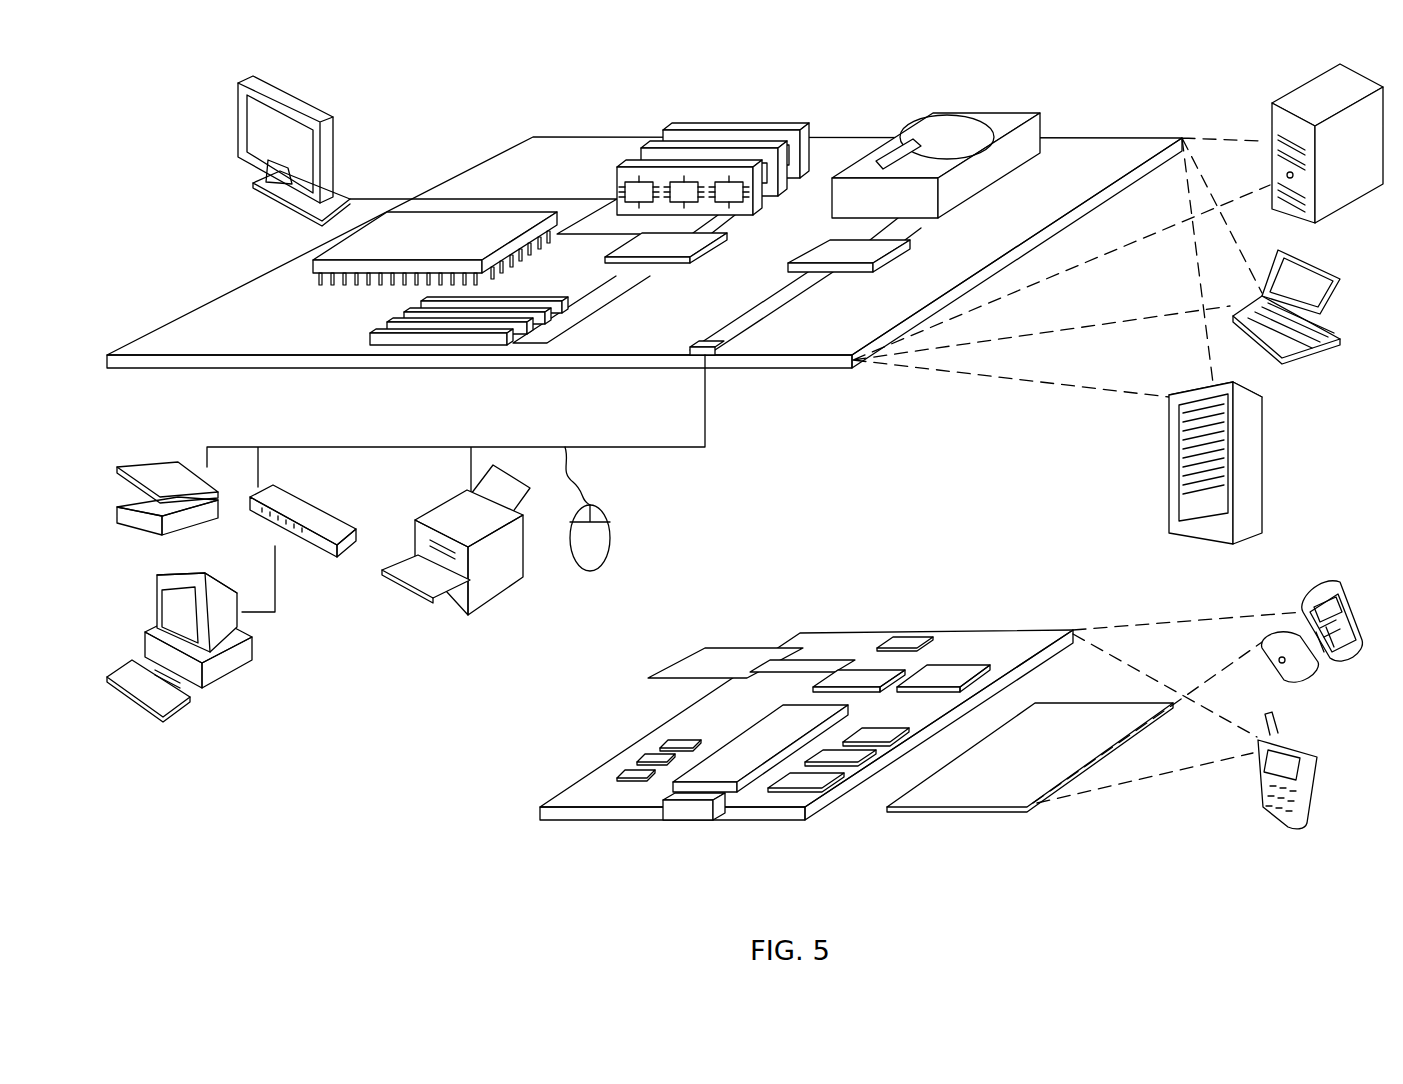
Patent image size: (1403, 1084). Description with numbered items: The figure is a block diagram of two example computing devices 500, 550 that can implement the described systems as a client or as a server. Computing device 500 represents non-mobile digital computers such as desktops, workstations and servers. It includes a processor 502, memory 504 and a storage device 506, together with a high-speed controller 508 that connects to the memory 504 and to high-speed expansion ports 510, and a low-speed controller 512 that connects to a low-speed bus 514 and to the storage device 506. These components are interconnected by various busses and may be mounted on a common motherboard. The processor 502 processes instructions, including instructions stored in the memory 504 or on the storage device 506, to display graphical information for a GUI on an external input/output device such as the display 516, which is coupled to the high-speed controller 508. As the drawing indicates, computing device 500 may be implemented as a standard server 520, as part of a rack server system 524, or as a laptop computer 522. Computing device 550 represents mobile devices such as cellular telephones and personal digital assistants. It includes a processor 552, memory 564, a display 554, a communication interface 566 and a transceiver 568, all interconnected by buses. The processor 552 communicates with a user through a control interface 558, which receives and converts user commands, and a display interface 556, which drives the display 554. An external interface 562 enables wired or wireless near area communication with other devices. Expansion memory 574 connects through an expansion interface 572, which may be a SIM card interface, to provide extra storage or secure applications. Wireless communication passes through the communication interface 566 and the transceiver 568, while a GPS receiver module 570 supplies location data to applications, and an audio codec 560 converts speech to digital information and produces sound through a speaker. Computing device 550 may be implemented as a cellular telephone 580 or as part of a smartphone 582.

The computing device 500 is at (449, 104).
The processor 502 is at (313, 264).
The memory 504 is at (667, 130).
The storage device 506 is at (930, 116).
The high-speed controller 508 is at (645, 248).
The high-speed expansion ports 510 is at (397, 326).
The low-speed controller 512 is at (830, 250).
The low-speed bus 514 is at (718, 352).
The display 516 is at (243, 82).
The standard server 520 is at (1272, 122).
The laptop computer 522 is at (1340, 276).
The rack server system 524 is at (1169, 488).
The computing device 550 is at (515, 828).
The processor 552 is at (730, 772).
The display 554 is at (988, 793).
The display interface 556 is at (803, 782).
The control interface 558 is at (840, 755).
The audio codec 560 is at (868, 736).
The external interface 562 is at (693, 813).
The memory 564 is at (645, 762).
The communication interface 566 is at (860, 674).
The transceiver 568 is at (945, 673).
The GPS receiver module 570 is at (915, 640).
The expansion interface 572 is at (777, 648).
The expansion memory 574 is at (703, 648).
The mobile phone 580 is at (1316, 592).
The smartphone 582 is at (1258, 776).